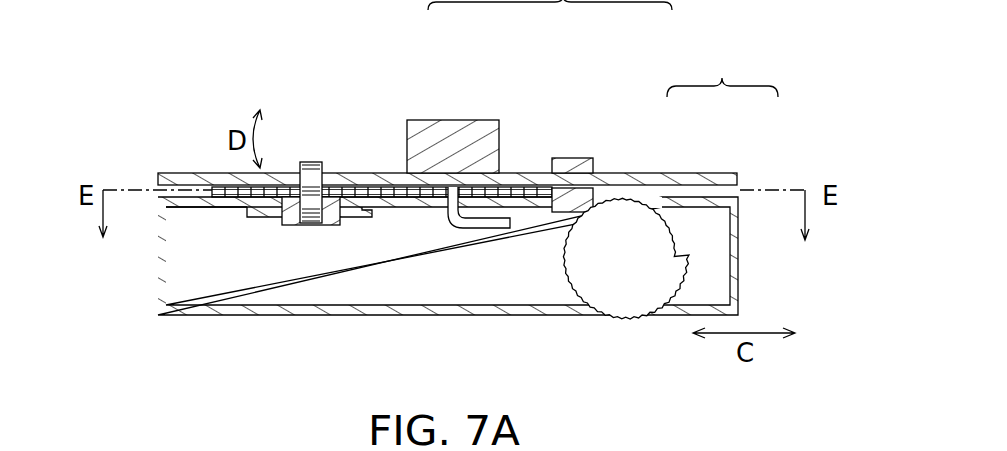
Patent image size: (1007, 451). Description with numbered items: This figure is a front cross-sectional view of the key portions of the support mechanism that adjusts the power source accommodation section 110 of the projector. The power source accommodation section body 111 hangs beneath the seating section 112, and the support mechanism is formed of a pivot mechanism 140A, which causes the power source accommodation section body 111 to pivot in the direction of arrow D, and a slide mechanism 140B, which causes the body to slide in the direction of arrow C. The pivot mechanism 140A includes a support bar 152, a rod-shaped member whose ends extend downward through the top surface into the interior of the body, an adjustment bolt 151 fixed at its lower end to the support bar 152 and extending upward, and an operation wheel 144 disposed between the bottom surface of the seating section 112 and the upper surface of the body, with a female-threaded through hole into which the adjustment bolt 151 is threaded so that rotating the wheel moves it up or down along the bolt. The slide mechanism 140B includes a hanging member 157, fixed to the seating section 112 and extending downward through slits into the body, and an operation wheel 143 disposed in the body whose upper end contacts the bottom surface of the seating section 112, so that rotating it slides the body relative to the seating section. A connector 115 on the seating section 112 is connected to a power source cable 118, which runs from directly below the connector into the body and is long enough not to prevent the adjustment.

The power source accommodation section 110 is at (722, 71).
The power source accommodation section body 111 is at (712, 200).
The seating section 112 is at (675, 172).
The connector 115 is at (500, 147).
The power source cable 118 is at (477, 233).
The pivot mechanism 140A is at (350, 110).
The slide mechanism 140B is at (648, 93).
The operation wheel 143 is at (623, 322).
The operation wheel 144 is at (207, 215).
The adjustment bolt 151 is at (322, 168).
The support bar 152 is at (288, 217).
The hanging member 157 is at (593, 163).